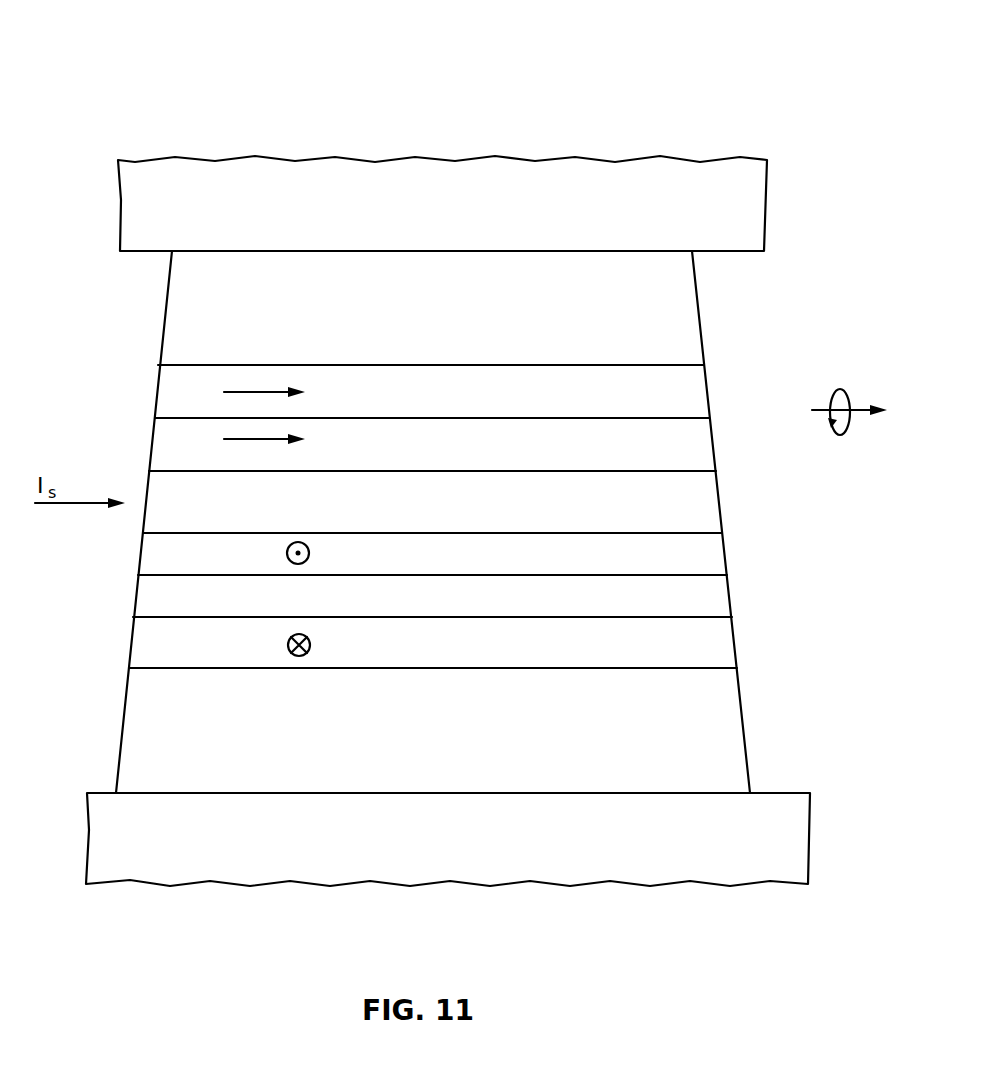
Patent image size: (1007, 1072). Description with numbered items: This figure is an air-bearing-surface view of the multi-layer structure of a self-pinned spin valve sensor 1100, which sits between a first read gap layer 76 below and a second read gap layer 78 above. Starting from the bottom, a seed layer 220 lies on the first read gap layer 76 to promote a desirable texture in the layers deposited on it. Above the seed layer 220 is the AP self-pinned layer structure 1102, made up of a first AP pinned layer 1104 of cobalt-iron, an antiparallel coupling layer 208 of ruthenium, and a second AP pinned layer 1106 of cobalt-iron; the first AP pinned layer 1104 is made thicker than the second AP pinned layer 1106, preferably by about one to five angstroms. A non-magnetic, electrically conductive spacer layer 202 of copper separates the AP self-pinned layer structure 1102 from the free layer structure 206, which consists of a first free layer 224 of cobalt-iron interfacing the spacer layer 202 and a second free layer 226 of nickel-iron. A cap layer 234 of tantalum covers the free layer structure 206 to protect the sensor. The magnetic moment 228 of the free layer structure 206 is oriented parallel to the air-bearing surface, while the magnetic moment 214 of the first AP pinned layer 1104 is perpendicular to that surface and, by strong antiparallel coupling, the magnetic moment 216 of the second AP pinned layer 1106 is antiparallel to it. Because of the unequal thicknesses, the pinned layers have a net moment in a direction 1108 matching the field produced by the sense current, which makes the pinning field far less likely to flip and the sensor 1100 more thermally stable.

The second read gap layer 78 is at (745, 195).
The first read gap layer 76 is at (715, 865).
The spin valve sensor 1100 is at (8, 793).
The free layer structure 206 is at (55, 471).
The AP self-pinned layer structure 1102 is at (52, 533).
The cap layer 234 is at (698, 305).
The second free layer 226 is at (706, 390).
The first free layer 224 is at (713, 440).
The spacer layer 202 is at (718, 490).
The second AP pinned layer 1106 is at (724, 545).
The antiparallel coupling layer 208 is at (730, 597).
The first AP pinned layer 1104 is at (735, 640).
The seed layer 220 is at (742, 705).
The magnetic moment of free layer structure 228 is at (247, 437).
The magnetic moment of second AP pinned layer 216 is at (287, 553).
The magnetic moment of first AP pinned layer 214 is at (288, 645).
The direction of net magnetic moment 1108 is at (842, 390).